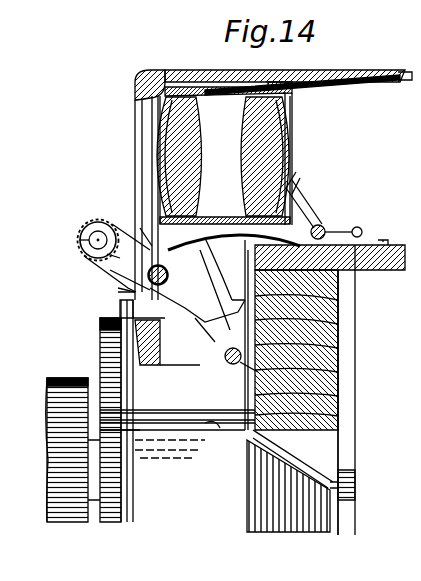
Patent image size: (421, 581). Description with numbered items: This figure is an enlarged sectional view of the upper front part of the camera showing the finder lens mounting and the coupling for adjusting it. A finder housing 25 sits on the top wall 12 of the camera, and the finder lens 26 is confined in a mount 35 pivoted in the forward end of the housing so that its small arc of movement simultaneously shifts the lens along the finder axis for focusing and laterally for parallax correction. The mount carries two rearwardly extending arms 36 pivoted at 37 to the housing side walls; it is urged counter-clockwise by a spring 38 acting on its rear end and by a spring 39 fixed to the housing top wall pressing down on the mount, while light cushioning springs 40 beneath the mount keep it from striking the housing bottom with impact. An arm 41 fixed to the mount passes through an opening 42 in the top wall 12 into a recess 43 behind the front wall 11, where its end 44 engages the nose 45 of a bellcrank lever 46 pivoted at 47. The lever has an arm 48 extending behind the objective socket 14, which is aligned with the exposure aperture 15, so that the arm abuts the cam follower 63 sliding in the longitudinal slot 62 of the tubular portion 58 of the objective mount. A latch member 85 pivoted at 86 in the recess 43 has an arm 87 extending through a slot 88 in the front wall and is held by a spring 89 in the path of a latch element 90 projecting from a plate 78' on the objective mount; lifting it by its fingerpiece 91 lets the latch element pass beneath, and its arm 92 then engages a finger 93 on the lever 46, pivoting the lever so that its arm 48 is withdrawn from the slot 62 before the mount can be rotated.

The finder housing 25 is at (143, 70).
The finder lens mount 35 is at (188, 95).
The spring 39 is at (302, 84).
The finder lens 26 is at (246, 152).
The arm 41 is at (234, 332).
The spring 38 is at (298, 180).
The rearwardly extending arms 36 is at (318, 214).
The pivot 37 is at (330, 236).
The top wall 12 is at (378, 264).
The recess 43 is at (338, 298).
The end of arm 44 is at (338, 322).
The nose 45 is at (338, 346).
The pivot 47 is at (338, 370).
The lever 46 is at (338, 394).
The arm of lever 48 is at (338, 416).
The exposure aperture 15 is at (357, 500).
The objective socket 14 is at (44, 402).
The finger 93 is at (204, 330).
The opening 42 is at (180, 257).
The cushioning springs 40 is at (140, 228).
The fingerpiece 91 is at (80, 240).
The spring 89 is at (107, 257).
The latch member 85 is at (112, 276).
The arm 87 is at (125, 287).
The latch element 90 is at (120, 304).
The pivot 86 is at (102, 332).
The arm 92 is at (102, 350).
The front wall 11 is at (55, 446).
The slot 88 is at (162, 362).
The tubular portion 58 is at (177, 452).
The longitudinal slot 62 is at (220, 430).
The cam follower 63 is at (152, 432).
The plate 78' is at (99, 502).